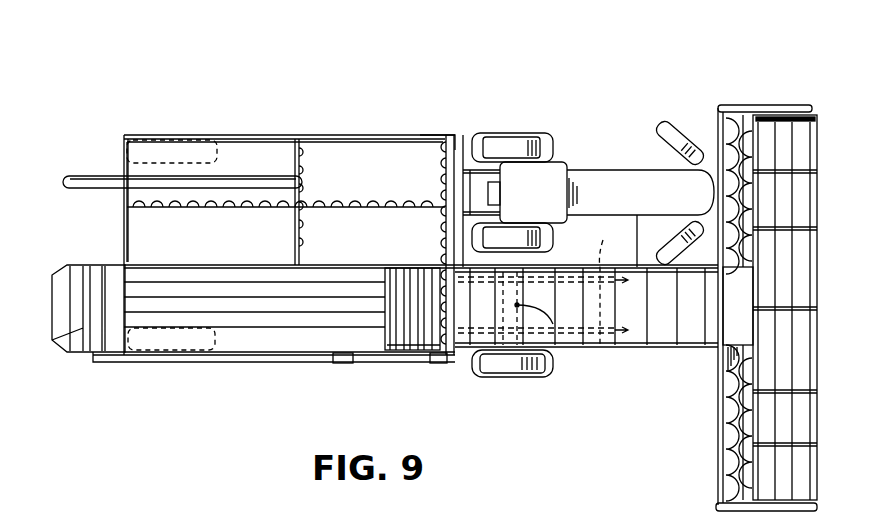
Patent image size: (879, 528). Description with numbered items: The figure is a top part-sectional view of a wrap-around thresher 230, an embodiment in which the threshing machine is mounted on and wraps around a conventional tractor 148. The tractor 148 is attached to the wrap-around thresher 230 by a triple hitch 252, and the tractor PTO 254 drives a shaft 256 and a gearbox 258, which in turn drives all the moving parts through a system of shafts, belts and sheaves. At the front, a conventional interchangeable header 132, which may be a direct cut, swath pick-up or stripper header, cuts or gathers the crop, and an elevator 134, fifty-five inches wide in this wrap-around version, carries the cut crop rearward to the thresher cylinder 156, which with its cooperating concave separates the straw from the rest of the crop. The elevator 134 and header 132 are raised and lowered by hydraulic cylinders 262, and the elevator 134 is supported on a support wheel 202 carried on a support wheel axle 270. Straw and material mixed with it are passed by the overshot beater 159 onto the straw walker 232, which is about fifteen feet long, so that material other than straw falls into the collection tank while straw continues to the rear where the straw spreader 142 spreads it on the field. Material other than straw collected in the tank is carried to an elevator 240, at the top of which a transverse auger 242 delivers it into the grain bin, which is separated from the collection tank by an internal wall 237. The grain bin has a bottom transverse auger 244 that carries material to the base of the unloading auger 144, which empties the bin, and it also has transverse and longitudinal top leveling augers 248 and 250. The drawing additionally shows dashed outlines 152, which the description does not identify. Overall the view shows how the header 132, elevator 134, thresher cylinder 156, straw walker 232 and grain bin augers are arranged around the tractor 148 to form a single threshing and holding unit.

The header 132 is at (780, 135).
The elevator 134 is at (690, 320).
The straw spreader 142 is at (60, 340).
The unloading auger 144 is at (75, 175).
The tractor 148 is at (655, 172).
The plate 152 is at (152, 138).
The thresher cylinder 156 is at (427, 293).
The overshot beater 159 is at (398, 297).
The support wheel 202 is at (512, 378).
The wrap-around thresher 230 is at (696, 104).
The straw walker 232 is at (278, 277).
The internal wall 237 is at (157, 264).
The elevator 240 is at (385, 362).
The transverse auger 242 is at (455, 362).
The bottom transverse auger 244 is at (272, 136).
The transverse top leveling auger 248 is at (433, 135).
The longitudinal top leveling auger 250 is at (322, 198).
The triple hitch 252 is at (465, 135).
The tractor PTO 254 is at (499, 182).
The shaft 256 is at (497, 182).
The gearbox 258 is at (444, 192).
The hydraulic cylinders 262 is at (603, 240).
The support wheel axle 270 is at (553, 327).